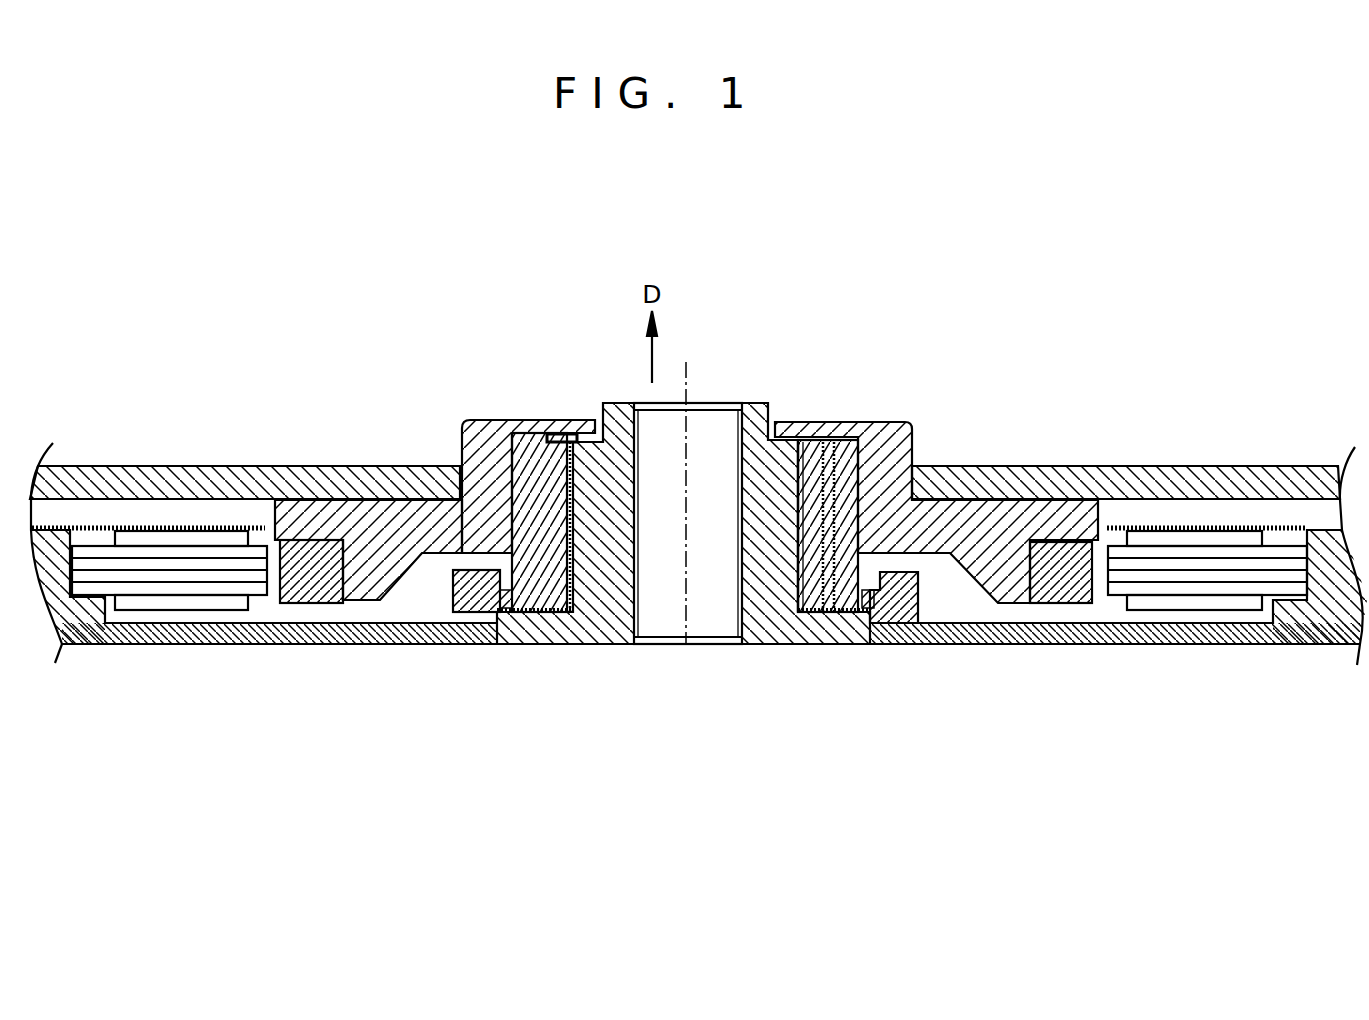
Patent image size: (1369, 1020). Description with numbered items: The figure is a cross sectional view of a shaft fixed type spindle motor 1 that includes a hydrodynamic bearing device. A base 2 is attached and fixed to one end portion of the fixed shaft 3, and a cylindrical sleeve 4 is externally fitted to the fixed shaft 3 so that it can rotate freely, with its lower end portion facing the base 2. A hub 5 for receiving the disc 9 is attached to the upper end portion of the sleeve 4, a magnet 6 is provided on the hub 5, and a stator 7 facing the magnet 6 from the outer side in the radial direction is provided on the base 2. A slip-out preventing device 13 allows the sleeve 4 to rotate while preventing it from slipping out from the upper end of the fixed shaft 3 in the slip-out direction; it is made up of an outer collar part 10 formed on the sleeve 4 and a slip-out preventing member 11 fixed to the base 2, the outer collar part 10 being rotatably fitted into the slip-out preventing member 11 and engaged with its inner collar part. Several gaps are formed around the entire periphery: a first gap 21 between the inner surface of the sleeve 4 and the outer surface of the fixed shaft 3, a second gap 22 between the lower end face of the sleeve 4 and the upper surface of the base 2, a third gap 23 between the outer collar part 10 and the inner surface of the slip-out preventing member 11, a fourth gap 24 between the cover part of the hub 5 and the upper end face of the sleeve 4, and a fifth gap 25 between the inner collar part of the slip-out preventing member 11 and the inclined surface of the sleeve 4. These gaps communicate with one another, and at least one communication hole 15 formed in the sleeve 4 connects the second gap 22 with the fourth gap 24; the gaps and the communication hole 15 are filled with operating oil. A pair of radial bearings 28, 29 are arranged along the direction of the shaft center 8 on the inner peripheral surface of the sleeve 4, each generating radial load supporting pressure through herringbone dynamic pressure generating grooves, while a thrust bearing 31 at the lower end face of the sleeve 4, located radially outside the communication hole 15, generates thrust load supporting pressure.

The spindle motor 1 is at (1092, 368).
The base 2 is at (1077, 645).
The fixed shaft 3 is at (713, 403).
The sleeve 4 is at (516, 460).
The hub 5 is at (385, 570).
The magnet 6 is at (307, 585).
The stator 7 is at (165, 575).
The shaft center 8 is at (686, 645).
The disc 9 is at (212, 473).
The outer collar part 10 is at (505, 613).
The slip-out preventing member 11 is at (933, 603).
The slip-out preventing device 13 is at (472, 548).
The communication hole 15 is at (900, 422).
The first gap 21 is at (797, 526).
The second gap 22 is at (818, 613).
The third gap 23 is at (880, 607).
The fourth gap 24 is at (828, 440).
The fifth gap 25 is at (970, 500).
The radial bearing 28 is at (550, 433).
The radial bearing 29 is at (557, 622).
The thrust bearing 31 is at (540, 614).